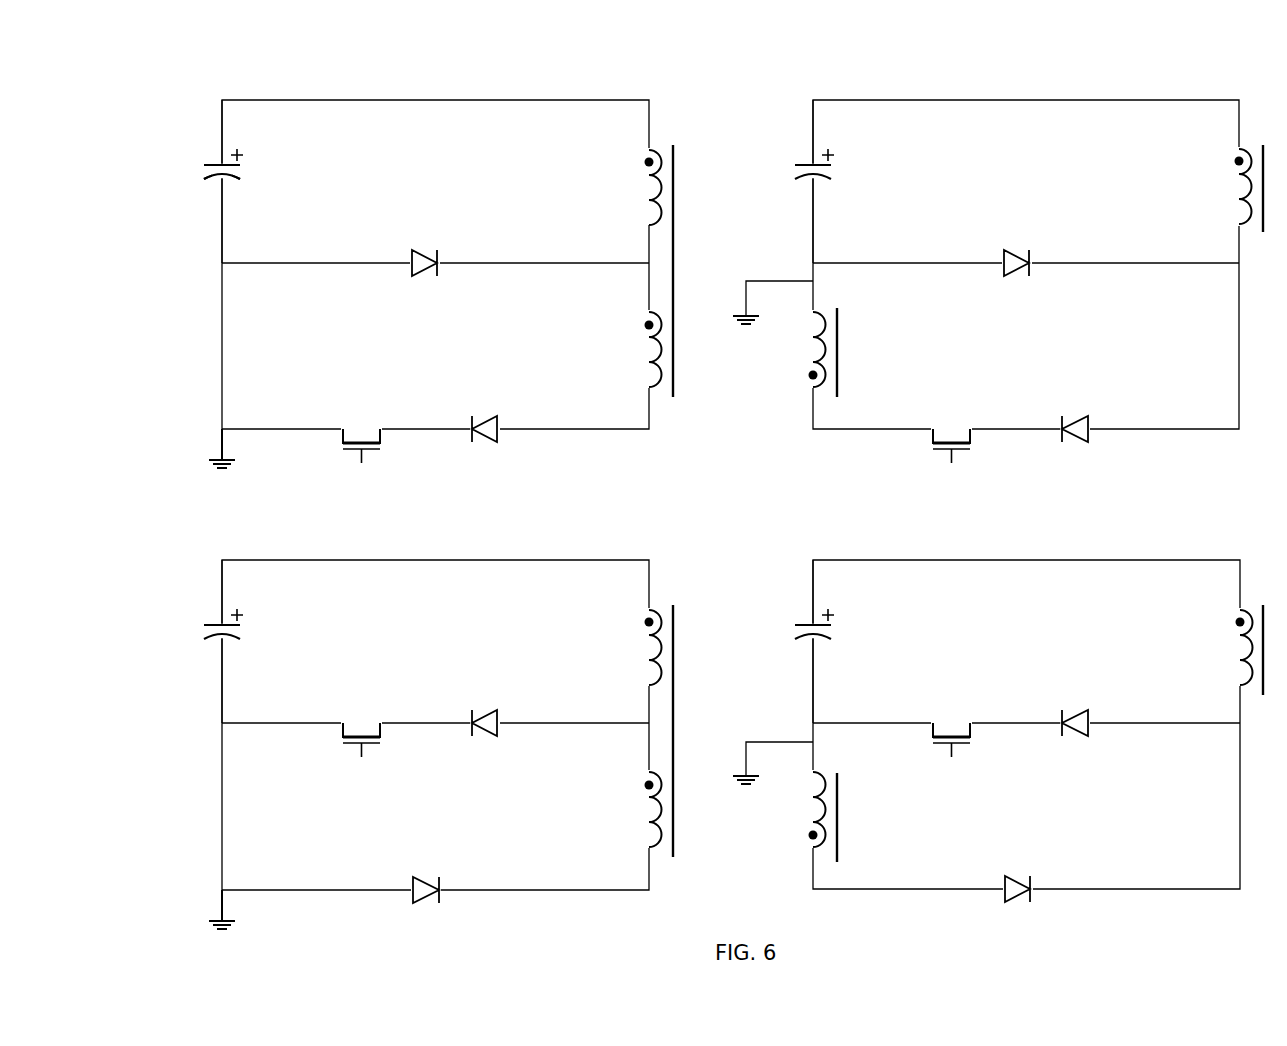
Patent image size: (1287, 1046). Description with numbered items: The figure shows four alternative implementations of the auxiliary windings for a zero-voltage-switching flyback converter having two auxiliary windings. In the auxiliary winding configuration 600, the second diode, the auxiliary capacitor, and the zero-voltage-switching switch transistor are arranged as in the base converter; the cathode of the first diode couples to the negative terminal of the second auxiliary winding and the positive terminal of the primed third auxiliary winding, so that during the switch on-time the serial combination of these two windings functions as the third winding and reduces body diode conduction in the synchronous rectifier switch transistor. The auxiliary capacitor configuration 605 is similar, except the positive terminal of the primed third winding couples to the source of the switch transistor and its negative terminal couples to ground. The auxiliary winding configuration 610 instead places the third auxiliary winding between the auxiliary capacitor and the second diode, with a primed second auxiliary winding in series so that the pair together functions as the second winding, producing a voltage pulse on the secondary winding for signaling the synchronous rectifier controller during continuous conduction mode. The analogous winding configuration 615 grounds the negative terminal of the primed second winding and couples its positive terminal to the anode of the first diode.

The auxiliary winding configuration 600 is at (337, 66).
The auxiliary capacitor configuration 605 is at (901, 80).
The auxiliary winding configuration 610 is at (351, 532).
The winding configuration 615 is at (916, 545).